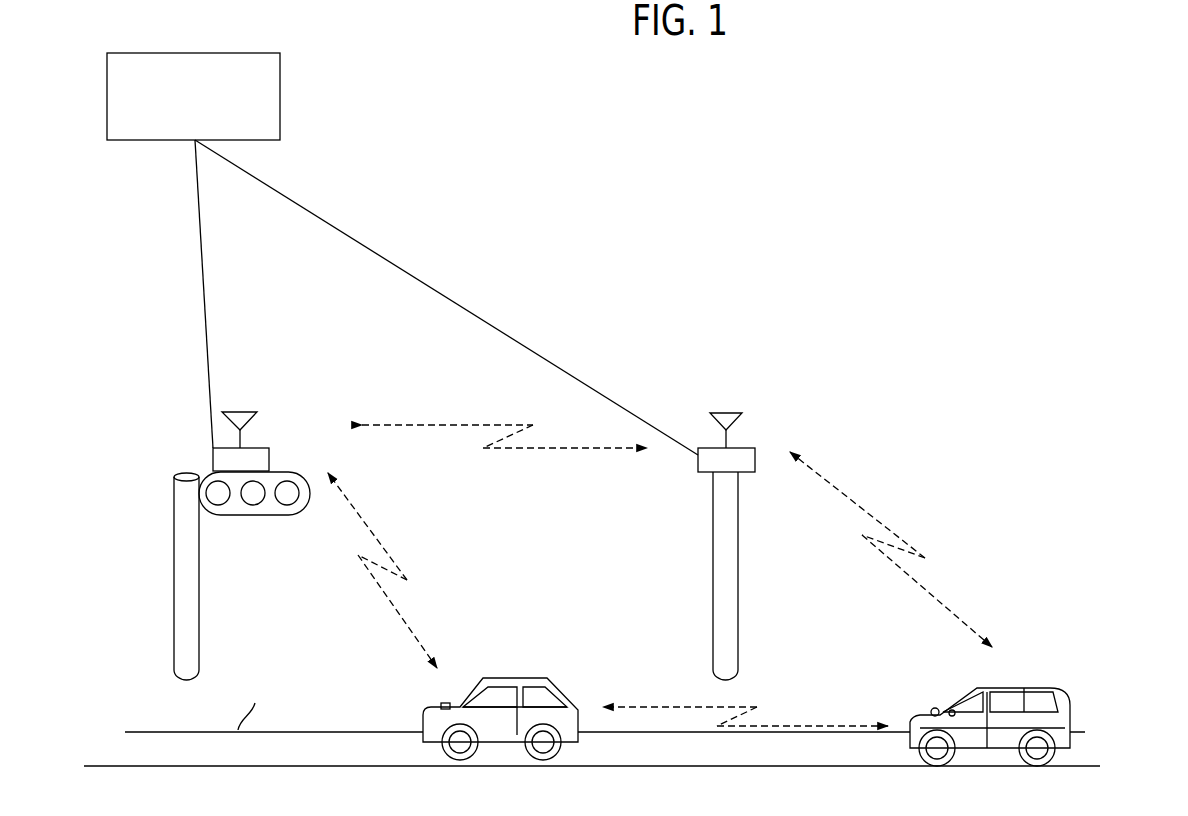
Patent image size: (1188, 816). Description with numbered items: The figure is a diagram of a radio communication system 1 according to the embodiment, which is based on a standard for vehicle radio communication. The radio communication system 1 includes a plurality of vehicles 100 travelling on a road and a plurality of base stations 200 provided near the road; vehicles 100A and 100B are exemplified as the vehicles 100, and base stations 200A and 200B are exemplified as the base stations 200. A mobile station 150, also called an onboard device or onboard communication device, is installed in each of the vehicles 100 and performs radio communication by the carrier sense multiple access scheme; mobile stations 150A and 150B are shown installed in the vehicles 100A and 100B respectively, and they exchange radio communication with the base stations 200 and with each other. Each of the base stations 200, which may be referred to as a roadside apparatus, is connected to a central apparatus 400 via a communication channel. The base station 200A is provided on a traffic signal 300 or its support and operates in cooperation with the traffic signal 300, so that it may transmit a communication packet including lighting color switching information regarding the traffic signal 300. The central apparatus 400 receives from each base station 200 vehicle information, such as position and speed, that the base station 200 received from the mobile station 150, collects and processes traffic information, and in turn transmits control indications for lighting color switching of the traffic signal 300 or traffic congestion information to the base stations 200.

The radio communication system 1 is at (879, 206).
The central apparatus 400 is at (280, 95).
The base station 200 is at (548, 529).
The base station 200A is at (258, 448).
The base station 200B is at (750, 448).
The traffic signal 300 is at (248, 515).
The vehicle 100 is at (790, 682).
The vehicle 100A is at (538, 679).
The vehicle 100B is at (997, 697).
The mobile station 150 is at (503, 653).
The mobile station 150A is at (446, 703).
The mobile station 150B is at (925, 706).